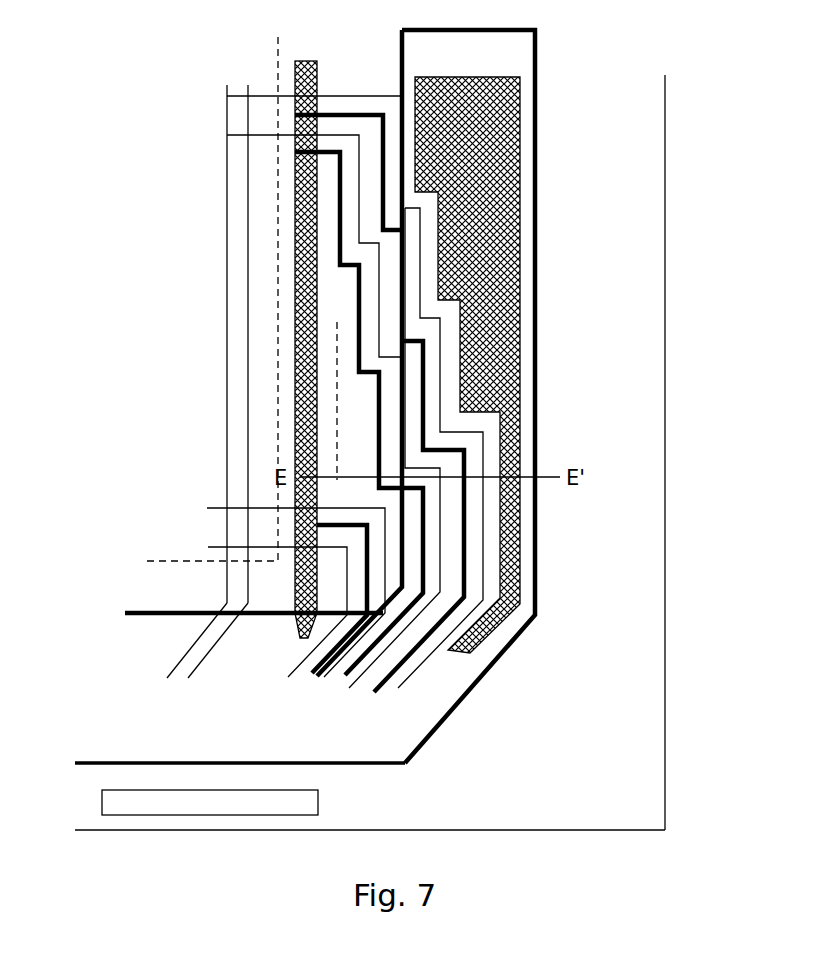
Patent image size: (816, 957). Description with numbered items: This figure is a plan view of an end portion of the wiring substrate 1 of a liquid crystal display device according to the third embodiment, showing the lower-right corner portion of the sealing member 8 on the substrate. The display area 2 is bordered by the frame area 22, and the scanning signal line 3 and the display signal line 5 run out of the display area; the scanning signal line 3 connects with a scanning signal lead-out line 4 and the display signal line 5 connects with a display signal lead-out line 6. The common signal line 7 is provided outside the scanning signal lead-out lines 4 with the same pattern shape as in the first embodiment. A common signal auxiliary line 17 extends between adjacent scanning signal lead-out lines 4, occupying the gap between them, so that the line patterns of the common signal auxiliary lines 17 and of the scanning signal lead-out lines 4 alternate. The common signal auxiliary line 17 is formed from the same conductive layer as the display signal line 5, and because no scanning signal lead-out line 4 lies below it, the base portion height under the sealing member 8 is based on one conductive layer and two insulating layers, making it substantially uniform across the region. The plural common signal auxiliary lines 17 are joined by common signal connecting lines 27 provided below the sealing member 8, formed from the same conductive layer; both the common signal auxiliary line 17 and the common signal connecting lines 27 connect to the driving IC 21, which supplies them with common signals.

The wiring substrate 1 is at (666, 302).
The display area 2 is at (170, 556).
The scanning signal line 3 is at (210, 508).
The scanning signal lead-out line 4 is at (440, 590).
The display signal line 5 is at (227, 360).
The display signal lead-out line 6 is at (178, 660).
The common signal line 7 is at (517, 345).
The sealing member 8 is at (537, 163).
The common signal auxiliary line 17 is at (420, 424).
The driving IC 21 is at (110, 790).
The frame area 22 is at (660, 755).
The common signal connecting line 27 is at (292, 636).